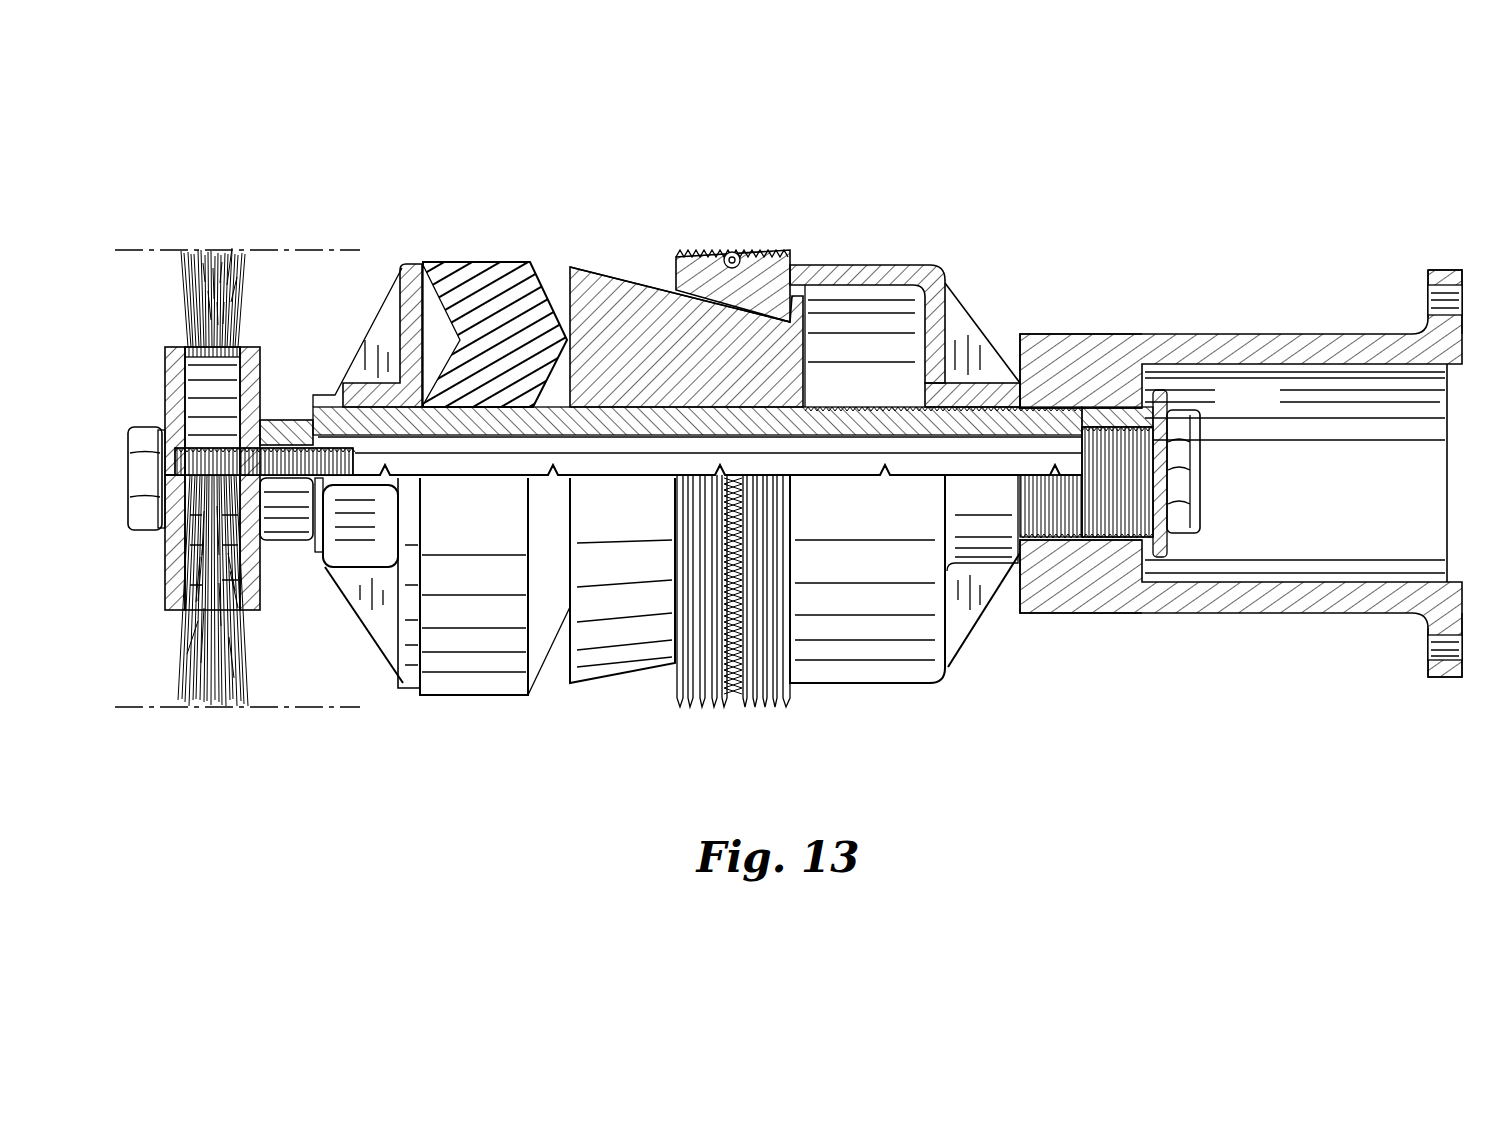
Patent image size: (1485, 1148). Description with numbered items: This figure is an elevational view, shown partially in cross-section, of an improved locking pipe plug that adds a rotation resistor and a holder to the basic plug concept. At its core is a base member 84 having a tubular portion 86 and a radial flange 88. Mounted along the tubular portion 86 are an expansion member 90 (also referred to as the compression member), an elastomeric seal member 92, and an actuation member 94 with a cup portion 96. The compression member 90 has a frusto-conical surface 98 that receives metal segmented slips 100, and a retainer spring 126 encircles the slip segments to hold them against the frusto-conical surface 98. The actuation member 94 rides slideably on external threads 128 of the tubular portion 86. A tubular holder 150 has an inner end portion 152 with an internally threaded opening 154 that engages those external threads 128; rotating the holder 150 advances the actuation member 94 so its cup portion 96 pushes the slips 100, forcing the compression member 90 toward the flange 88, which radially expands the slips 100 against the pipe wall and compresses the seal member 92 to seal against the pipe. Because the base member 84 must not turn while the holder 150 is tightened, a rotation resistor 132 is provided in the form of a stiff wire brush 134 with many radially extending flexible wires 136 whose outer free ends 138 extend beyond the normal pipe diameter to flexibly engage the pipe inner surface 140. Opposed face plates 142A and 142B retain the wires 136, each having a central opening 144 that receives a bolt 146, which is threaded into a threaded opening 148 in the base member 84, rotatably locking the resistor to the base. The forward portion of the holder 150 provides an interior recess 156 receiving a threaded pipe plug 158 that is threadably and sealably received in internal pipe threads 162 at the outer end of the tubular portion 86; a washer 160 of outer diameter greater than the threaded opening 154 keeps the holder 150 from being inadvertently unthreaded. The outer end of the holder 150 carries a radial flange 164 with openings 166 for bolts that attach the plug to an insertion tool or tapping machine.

The base member 84 is at (353, 402).
The tubular portion 86 is at (877, 417).
The radial flange 88 is at (410, 267).
The expansion member 90 is at (615, 313).
The elastomeric seal member 92 is at (490, 290).
The actuation member 94 is at (948, 290).
The cup portion 96 is at (868, 265).
The frusto-conical surface 98 is at (638, 283).
The segmented slips 100 is at (712, 277).
The retainer spring 126 is at (735, 253).
The external threads 128 is at (990, 402).
The rotation resistor 132 is at (178, 667).
The wire brush 134 is at (213, 397).
The flexible wires 136 is at (176, 262).
The outer free end 138 is at (213, 250).
The pipe inner surface 140 is at (275, 712).
The face plate 142A is at (165, 350).
The face plate 142B is at (263, 367).
The central opening 144 is at (160, 440).
The bolt 146 is at (147, 515).
The threaded opening 148 is at (290, 470).
The holder 150 is at (1217, 305).
The inner end portion 152 is at (1057, 600).
The internally threaded opening 154 is at (1073, 423).
The interior recess 156 is at (1323, 378).
The threaded pipe plug 158 is at (1187, 462).
The washer 160 is at (1170, 393).
The internal pipe threads 162 is at (1143, 437).
The radial flange 164 is at (1447, 268).
The openings 166 is at (1433, 300).